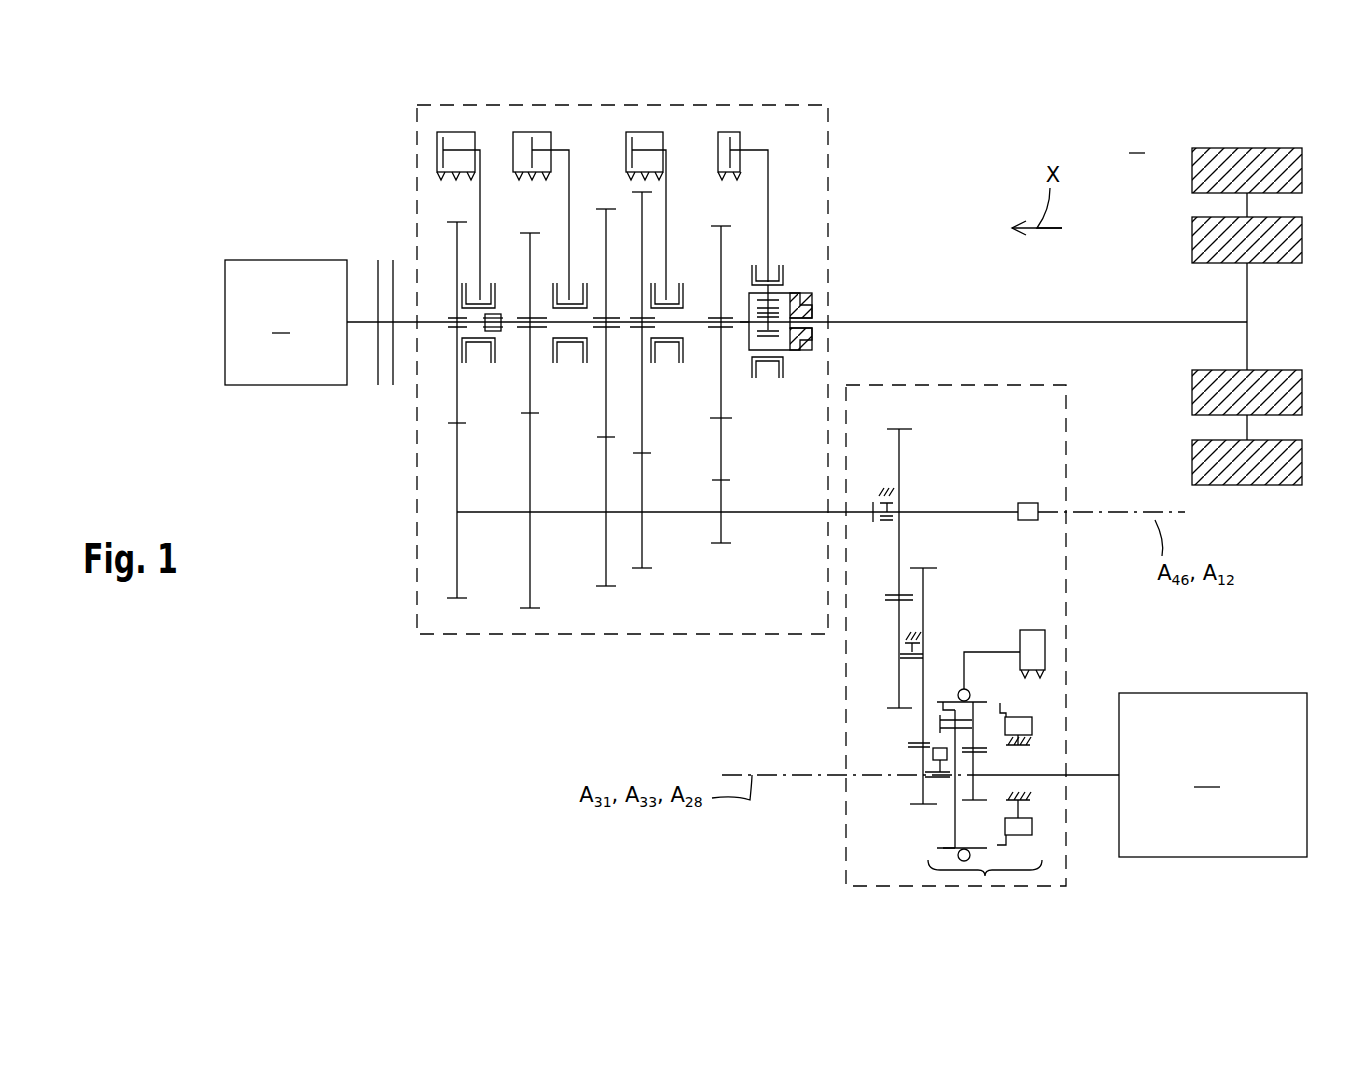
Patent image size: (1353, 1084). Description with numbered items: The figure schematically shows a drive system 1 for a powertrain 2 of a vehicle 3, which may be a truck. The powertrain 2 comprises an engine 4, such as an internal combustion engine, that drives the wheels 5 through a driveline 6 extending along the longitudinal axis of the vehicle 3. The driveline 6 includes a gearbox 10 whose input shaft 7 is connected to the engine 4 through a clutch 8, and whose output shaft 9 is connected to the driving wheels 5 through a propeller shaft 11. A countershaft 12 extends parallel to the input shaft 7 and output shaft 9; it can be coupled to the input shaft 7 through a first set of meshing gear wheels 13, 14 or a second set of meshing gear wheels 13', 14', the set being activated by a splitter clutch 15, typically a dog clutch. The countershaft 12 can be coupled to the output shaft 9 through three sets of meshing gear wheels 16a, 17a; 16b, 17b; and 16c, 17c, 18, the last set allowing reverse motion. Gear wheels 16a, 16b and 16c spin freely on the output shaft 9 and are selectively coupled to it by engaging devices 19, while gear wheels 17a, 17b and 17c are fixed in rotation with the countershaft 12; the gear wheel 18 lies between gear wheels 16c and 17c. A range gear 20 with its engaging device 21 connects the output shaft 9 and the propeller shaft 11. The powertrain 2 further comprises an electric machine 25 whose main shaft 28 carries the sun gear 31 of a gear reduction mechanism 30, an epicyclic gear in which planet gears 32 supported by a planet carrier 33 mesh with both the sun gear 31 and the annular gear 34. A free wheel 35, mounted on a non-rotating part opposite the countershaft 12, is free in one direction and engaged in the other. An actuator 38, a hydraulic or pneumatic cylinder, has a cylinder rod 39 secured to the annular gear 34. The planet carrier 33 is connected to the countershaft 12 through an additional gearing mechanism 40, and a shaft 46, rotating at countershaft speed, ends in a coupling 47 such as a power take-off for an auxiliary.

The drive system 1 is at (840, 848).
The powertrain 2 is at (930, 166).
The vehicle 3 is at (1137, 142).
The engine 4 is at (286, 322).
The wheels 5 is at (1268, 148).
The driveline 6 is at (947, 290).
The input shaft 7 is at (430, 327).
The clutch 8 is at (387, 248).
The output shaft 9 is at (749, 330).
The gearbox 10 is at (413, 132).
The propeller shaft 11 is at (1068, 322).
The countershaft 12 is at (497, 512).
The gear wheel of first set of meshing gear wheels 13 is at (443, 254).
The gear wheel of second set of meshing gear wheels 13' is at (516, 254).
The gear wheel of first set of meshing gear wheels 14 is at (416, 460).
The gear wheel of second set of meshing gear wheels 14' is at (518, 465).
The clutch 15 is at (455, 133).
The gear wheel 16a is at (606, 230).
The gear wheel 16b is at (642, 425).
The gear wheel 16c is at (721, 255).
The gear wheel 17a is at (606, 492).
The gear wheel 17b is at (642, 545).
The gear wheel 17c is at (721, 527).
The gear wheel 18 is at (721, 437).
The engaging device 19 is at (558, 363).
The range gear 20 is at (800, 278).
The engaging device 21 is at (768, 200).
The electric machine 25 is at (1213, 775).
The main shaft 28 is at (1082, 774).
The gear reduction mechanism 30 is at (985, 877).
The sun gear 31 is at (985, 795).
The planet gears 32 is at (975, 718).
The planet carrier 33 is at (952, 816).
The annular gear 34 is at (945, 702).
The free wheel 35 is at (1032, 826).
The actuator 38 is at (1045, 645).
The cylinder rod 39 is at (985, 652).
The additional gearing mechanism 40 is at (886, 690).
The shaft 46 is at (940, 512).
The coupling 47 is at (1028, 503).